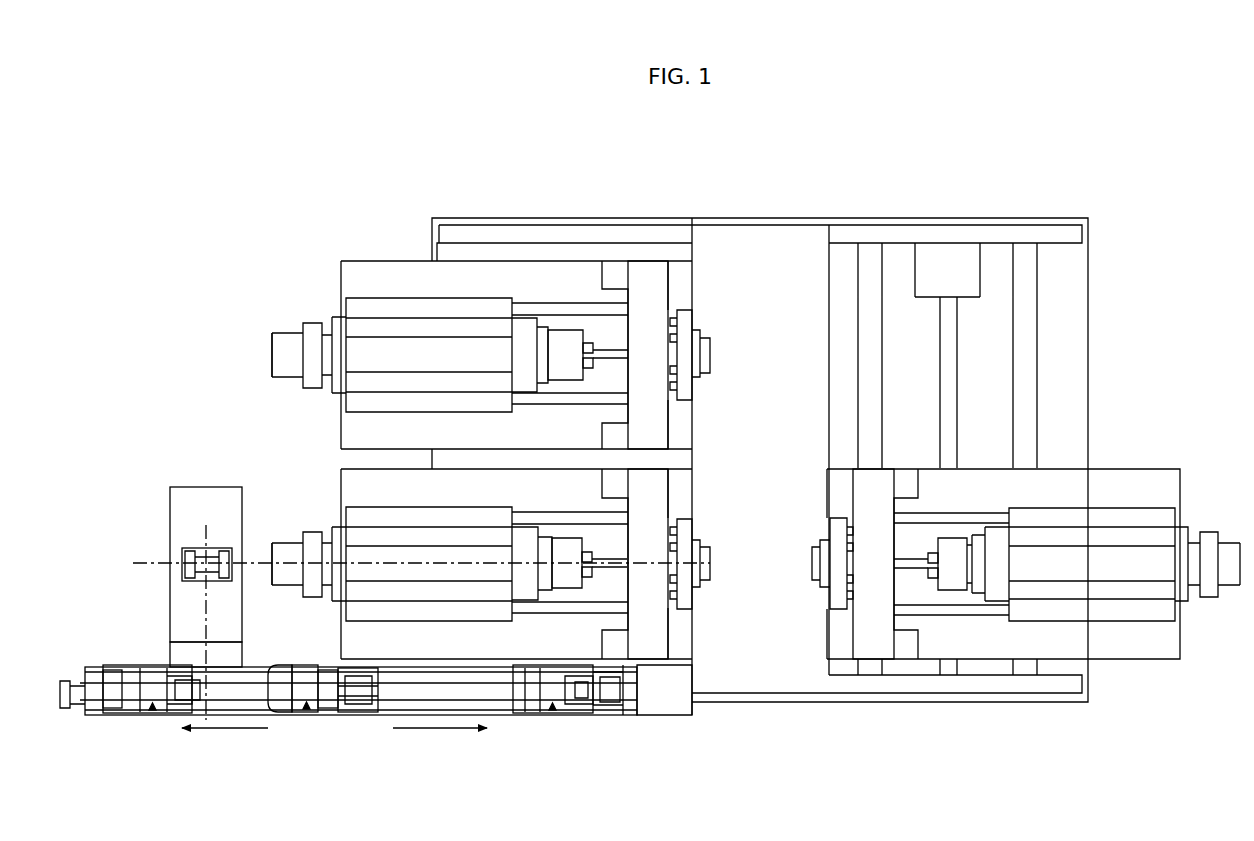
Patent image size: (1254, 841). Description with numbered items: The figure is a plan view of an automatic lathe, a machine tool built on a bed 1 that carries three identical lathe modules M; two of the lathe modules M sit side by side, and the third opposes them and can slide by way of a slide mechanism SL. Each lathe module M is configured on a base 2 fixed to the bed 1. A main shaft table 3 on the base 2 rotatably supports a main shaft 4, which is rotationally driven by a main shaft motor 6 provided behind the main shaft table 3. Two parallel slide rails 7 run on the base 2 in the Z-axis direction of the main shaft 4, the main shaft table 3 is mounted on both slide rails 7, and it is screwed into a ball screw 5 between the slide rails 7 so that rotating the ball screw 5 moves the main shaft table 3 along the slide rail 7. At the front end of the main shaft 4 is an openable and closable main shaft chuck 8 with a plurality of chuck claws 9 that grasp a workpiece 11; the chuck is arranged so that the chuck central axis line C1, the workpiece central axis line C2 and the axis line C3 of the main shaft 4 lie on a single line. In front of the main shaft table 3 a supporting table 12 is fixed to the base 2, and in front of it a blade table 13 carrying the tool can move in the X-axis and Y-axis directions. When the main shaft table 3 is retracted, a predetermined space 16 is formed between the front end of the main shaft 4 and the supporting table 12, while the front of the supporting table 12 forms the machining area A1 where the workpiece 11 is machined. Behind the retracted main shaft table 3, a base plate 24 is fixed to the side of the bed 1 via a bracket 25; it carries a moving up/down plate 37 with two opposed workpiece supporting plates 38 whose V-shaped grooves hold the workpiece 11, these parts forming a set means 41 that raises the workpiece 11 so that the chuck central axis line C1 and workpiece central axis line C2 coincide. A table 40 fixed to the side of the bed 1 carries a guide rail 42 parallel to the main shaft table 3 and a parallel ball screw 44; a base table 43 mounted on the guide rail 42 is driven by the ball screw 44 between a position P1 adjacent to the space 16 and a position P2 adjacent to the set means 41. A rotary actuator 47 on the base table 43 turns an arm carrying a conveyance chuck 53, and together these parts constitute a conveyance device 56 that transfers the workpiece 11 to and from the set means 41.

The bed 1 is at (709, 215).
The base 2 is at (395, 283).
The main shaft table 3 is at (460, 318).
The main shaft 4 is at (530, 340).
The ball screw 5 is at (623, 557).
The main shaft motor 6 is at (293, 556).
The slide rail 7 is at (530, 513).
The main shaft chuck 8 is at (590, 330).
The chuck claw 9 is at (586, 556).
The workpiece 11 is at (208, 567).
The supporting table 12 is at (660, 302).
The blade table 13 is at (708, 349).
The space 16 is at (610, 596).
The base plate 24 is at (182, 513).
The bracket 25 is at (182, 655).
The moving up/down plate 37 is at (205, 548).
The workpiece supporting plate 38 is at (180, 563).
The table 40 is at (676, 700).
The set means 41 is at (238, 475).
The guide rail 42 is at (107, 668).
The base table 43 is at (333, 713).
The ball screw 44 is at (107, 700).
The rotary actuator 47 is at (283, 714).
The conveyance chuck 53 is at (368, 713).
The conveyance device 56 is at (153, 715).
The lathe module M is at (333, 283).
The slide mechanism SL is at (1042, 334).
The machining area A1 is at (745, 640).
The chuck central axis line C1 is at (553, 592).
The workpiece central axis line C2 is at (417, 622).
The axis line of the main shaft C3 is at (432, 597).
The position adjacent to the space P1 is at (573, 722).
The position adjacent to the set means P2 is at (166, 722).